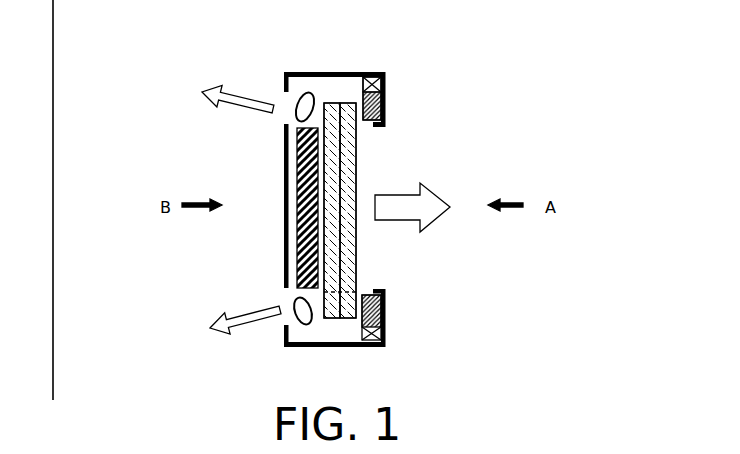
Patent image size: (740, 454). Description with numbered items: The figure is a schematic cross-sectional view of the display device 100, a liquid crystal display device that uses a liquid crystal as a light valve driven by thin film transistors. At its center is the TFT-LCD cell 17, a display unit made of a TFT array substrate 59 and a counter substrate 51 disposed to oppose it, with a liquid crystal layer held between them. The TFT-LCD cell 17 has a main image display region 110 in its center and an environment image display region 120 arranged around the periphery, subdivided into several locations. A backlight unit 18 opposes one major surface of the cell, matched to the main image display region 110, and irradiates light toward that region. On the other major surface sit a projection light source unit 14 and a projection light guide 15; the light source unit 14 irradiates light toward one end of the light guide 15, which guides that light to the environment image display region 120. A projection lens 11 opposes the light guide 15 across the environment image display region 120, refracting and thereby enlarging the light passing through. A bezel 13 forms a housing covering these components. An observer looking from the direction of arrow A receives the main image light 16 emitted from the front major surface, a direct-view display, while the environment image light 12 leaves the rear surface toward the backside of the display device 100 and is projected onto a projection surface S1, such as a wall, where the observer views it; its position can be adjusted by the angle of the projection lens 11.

The display device 100 is at (523, 340).
The projection lens 11 is at (290, 91).
The environment image light 12 is at (224, 210).
The bezel 13 is at (363, 73).
The projection light source unit 14 is at (383, 78).
The projection light guide 15 is at (378, 105).
The main image light 16 is at (418, 204).
The TFT-LCD cell 17 is at (455, 258).
The backlight unit 18 is at (297, 208).
The counter substrate 51 is at (352, 243).
The TFT array substrate 59 is at (337, 258).
The main image display region 110 is at (356, 145).
The environment image display region 120 is at (327, 108).
The projection surface S1 is at (53, 293).